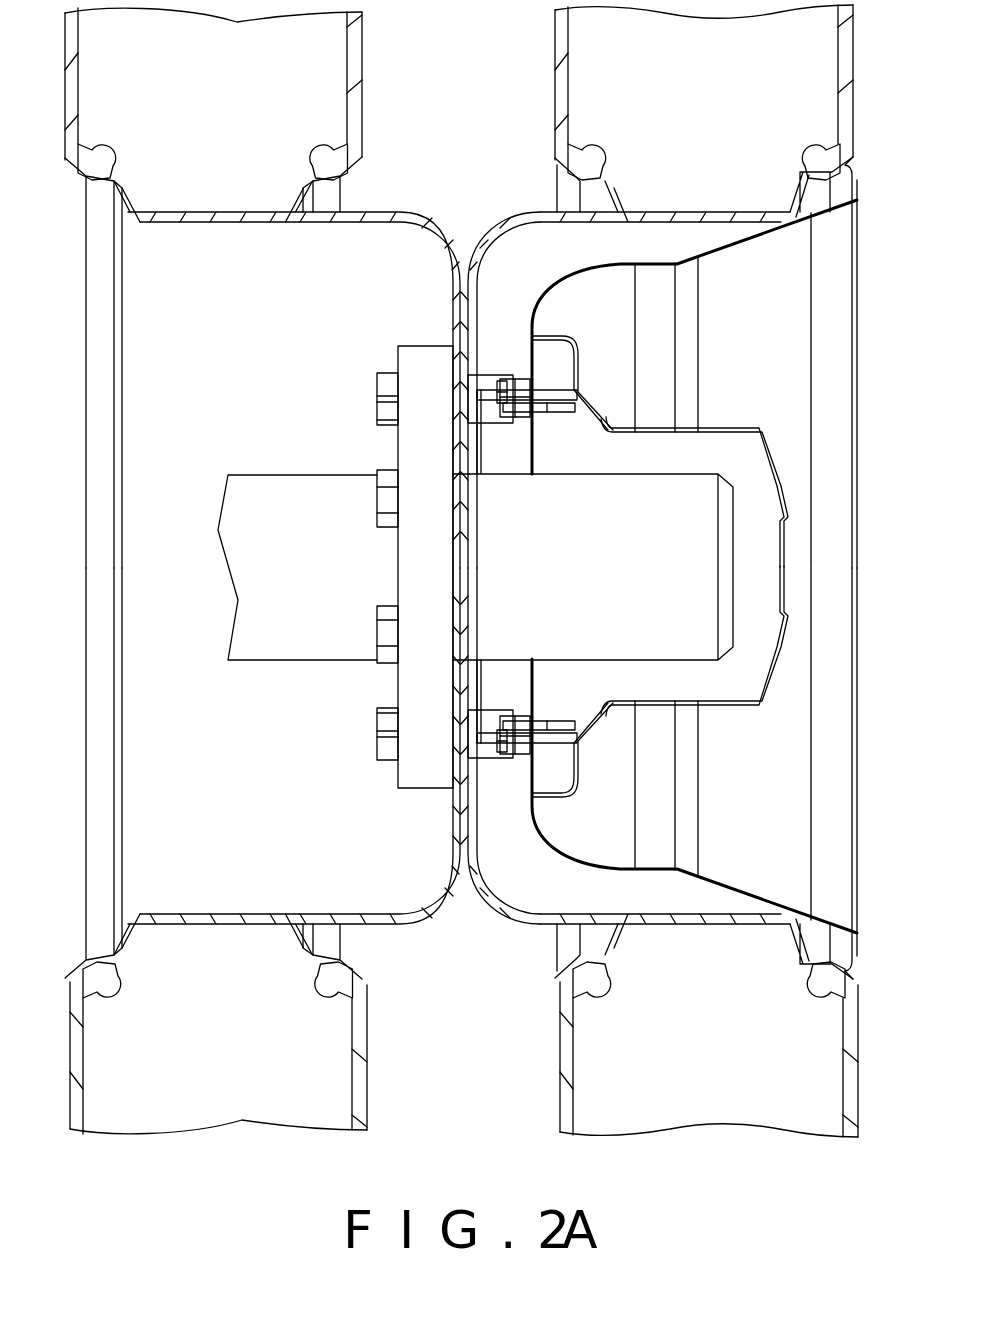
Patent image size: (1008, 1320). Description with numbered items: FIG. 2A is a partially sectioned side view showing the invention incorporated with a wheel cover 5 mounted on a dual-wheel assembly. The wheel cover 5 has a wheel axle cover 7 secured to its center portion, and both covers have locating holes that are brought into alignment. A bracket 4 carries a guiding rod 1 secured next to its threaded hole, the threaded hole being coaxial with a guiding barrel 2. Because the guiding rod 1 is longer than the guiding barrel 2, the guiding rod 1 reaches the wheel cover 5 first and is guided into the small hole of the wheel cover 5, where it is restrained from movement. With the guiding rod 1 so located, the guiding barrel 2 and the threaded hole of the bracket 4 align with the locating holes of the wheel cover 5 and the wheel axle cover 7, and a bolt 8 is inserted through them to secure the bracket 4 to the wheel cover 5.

The guiding rod 1 is at (511, 412).
The guiding barrel 2 is at (506, 402).
The bracket 4 is at (490, 393).
The wheel cover 5 is at (772, 222).
The wheel axle cover 7 is at (778, 470).
The bolt 8 is at (583, 392).